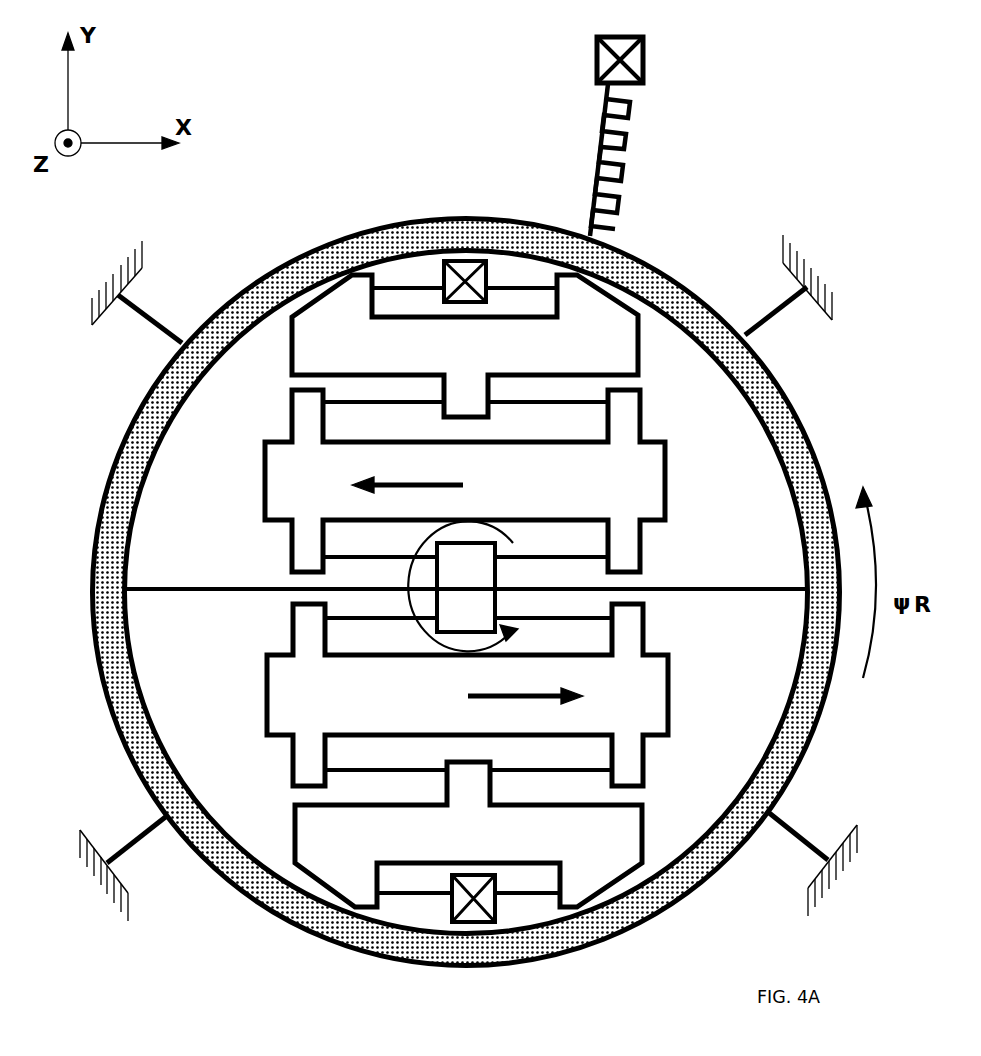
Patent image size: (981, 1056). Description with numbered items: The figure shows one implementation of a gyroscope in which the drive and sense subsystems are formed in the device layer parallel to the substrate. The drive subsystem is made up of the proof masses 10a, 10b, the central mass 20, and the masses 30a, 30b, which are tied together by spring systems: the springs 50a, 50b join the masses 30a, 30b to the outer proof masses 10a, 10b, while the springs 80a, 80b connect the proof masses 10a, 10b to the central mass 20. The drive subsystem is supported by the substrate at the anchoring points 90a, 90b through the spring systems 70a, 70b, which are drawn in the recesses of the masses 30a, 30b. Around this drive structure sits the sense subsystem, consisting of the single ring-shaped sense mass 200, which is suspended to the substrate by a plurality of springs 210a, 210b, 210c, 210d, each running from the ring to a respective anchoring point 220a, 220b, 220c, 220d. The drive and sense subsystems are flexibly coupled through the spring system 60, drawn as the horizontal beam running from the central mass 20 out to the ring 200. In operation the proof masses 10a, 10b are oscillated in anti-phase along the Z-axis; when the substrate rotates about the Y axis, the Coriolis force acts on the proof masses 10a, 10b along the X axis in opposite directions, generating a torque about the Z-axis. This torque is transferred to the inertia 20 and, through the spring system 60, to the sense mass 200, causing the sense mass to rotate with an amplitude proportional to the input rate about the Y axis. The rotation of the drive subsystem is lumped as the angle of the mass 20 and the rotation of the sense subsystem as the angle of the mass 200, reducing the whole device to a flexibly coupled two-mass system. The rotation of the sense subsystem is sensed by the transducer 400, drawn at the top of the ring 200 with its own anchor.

The proof mass 10a is at (300, 490).
The proof mass 10b is at (660, 690).
The mass 20 is at (463, 585).
The mass 30a is at (577, 350).
The mass 30b is at (592, 848).
The spring system 50a is at (353, 400).
The spring system 50b is at (587, 770).
The spring system 60 is at (187, 595).
The spring system 70a is at (400, 288).
The spring system 70b is at (410, 893).
The spring system 80a is at (540, 553).
The spring system 80b is at (547, 618).
The anchoring point 90a is at (460, 272).
The anchoring point 90b is at (473, 913).
The sense mass 200 is at (115, 513).
The spring 210a is at (790, 305).
The spring 210b is at (162, 323).
The spring 210c is at (143, 830).
The spring 210d is at (798, 828).
The anchoring point 220a is at (790, 250).
The anchoring point 220b is at (93, 303).
The anchoring point 220c is at (95, 867).
The anchoring point 220d is at (845, 860).
The transducer 400 is at (622, 167).